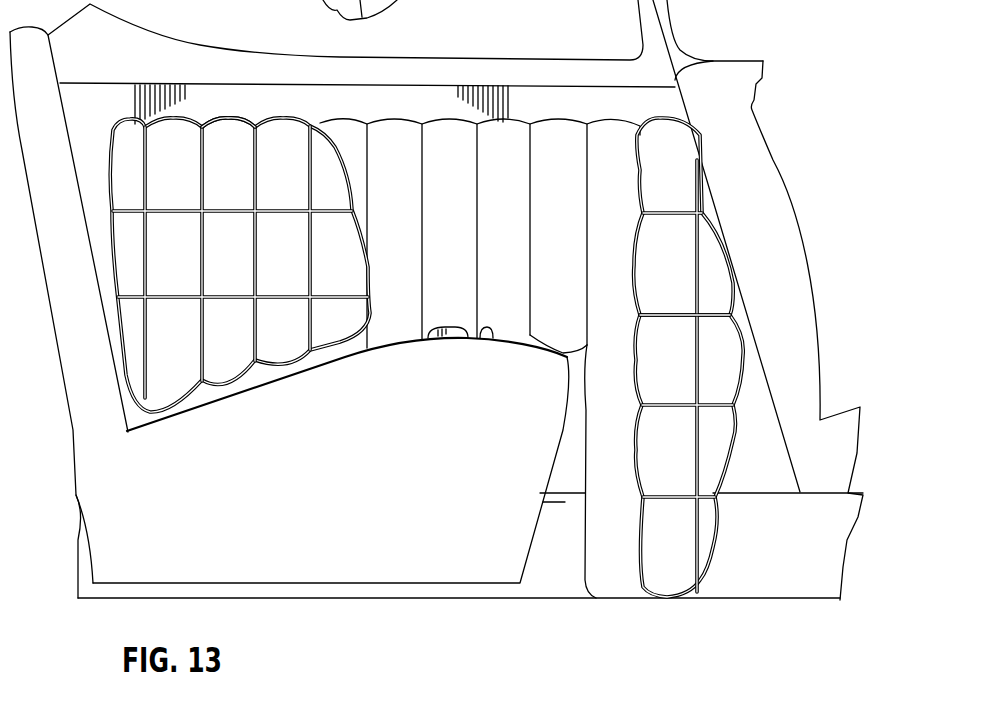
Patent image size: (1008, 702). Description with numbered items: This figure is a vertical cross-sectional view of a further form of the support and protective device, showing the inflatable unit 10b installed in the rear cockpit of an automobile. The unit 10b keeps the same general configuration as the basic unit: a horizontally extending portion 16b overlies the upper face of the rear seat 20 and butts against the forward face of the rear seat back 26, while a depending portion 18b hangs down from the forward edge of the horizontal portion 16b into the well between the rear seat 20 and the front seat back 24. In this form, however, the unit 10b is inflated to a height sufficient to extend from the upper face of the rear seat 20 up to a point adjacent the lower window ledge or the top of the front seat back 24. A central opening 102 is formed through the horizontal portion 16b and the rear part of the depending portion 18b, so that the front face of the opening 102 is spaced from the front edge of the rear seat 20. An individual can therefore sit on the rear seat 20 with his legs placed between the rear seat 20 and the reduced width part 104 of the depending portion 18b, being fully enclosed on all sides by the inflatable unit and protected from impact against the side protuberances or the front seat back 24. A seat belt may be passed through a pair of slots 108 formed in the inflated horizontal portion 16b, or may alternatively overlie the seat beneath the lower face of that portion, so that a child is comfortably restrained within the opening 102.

The rear seat back 26 is at (66, 117).
The inflatable unit 10b is at (240, 118).
The horizontally extending portion 16b is at (325, 160).
The central opening 102 is at (508, 169).
The front seat back 24 is at (716, 208).
The reduced width part 104 is at (668, 311).
The rear seat 20 is at (487, 342).
The slots 108 is at (240, 378).
The rear side airbag 18b is at (717, 435).